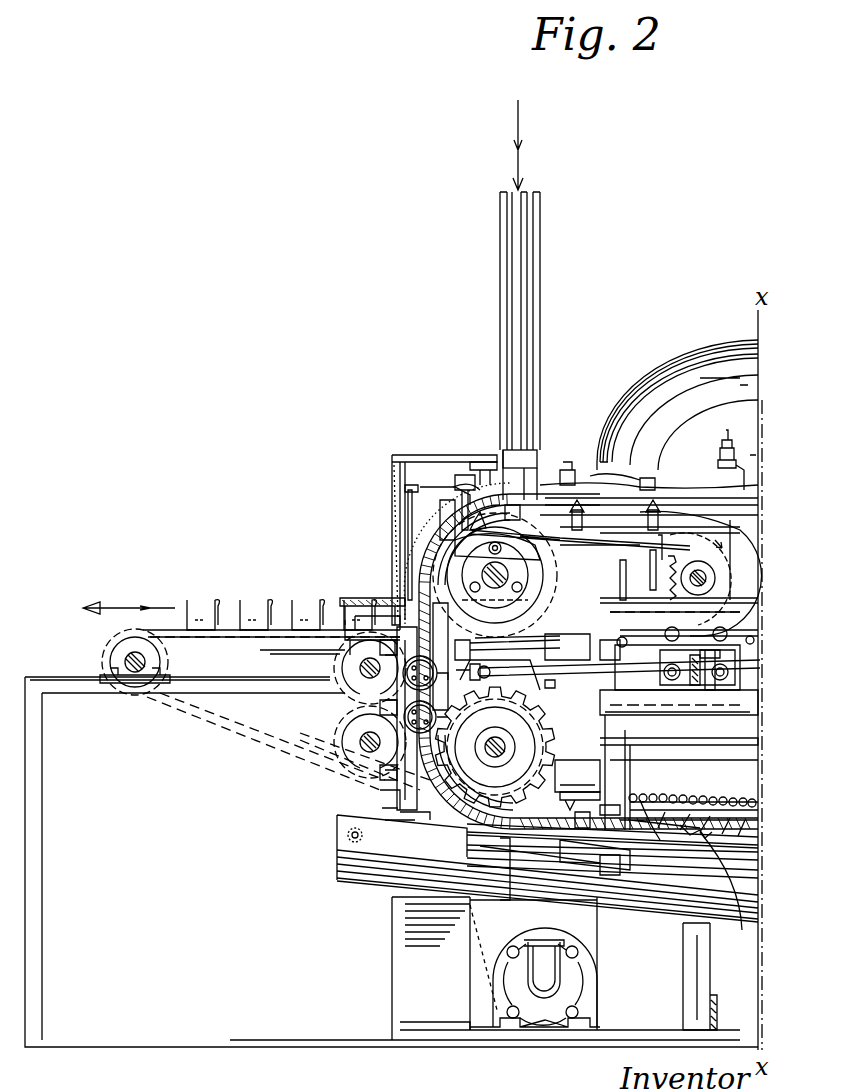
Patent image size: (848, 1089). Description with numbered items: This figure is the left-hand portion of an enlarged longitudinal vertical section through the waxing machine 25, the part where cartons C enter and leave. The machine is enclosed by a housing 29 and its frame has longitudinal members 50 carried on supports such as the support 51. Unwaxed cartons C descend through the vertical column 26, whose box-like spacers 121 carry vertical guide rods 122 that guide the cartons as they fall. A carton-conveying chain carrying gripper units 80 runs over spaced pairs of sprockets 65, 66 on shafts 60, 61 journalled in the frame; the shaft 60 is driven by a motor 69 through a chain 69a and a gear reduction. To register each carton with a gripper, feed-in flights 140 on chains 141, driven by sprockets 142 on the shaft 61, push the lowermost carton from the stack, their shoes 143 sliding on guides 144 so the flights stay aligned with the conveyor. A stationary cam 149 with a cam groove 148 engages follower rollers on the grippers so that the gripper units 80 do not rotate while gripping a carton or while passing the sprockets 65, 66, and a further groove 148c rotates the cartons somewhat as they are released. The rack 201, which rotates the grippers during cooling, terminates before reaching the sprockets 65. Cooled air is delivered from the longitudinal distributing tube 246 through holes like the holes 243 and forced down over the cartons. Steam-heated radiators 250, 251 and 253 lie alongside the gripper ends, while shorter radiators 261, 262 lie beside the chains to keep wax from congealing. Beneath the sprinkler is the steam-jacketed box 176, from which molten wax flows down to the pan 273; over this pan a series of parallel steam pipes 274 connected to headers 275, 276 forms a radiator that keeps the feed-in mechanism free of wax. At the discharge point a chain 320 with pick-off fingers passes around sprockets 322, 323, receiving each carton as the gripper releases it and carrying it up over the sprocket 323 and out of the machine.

The waxing machine 25 is at (722, 331).
The vertical column 26 is at (550, 278).
The housing 29 is at (652, 360).
The longitudinal members 50 is at (380, 598).
The support 51 is at (645, 672).
The shaft 60 is at (495, 747).
The shaft 61 is at (490, 660).
The sprockets 65 is at (538, 666).
The sprockets 66 is at (498, 660).
The motor 69 is at (592, 986).
The chain 69a is at (472, 933).
The gripper units 80 is at (356, 710).
The box-like spacers 121 is at (537, 440).
The vertical guide rods 122 is at (540, 232).
The feed-in flights 140 is at (620, 520).
The feed-in chains 141 is at (680, 610).
The sprockets 142 is at (470, 560).
The shoes 143 is at (467, 490).
The guides 144 is at (470, 530).
The cam groove 148 is at (462, 520).
The cam groove 148c is at (345, 662).
The stationary cam 149 is at (450, 490).
The box 176 is at (746, 470).
The rack 201 is at (727, 889).
The holes 243 is at (675, 800).
The longitudinal distributing tube 246 is at (668, 738).
The radiator 250 is at (487, 480).
The radiator 251 is at (380, 788).
The radiator 253 is at (575, 790).
The radiator 261 is at (705, 468).
The radiator 262 is at (360, 632).
The pan 273 is at (679, 701).
The steam pipes 274 is at (560, 655).
The header 275 is at (478, 680).
The header 276 is at (700, 686).
The chain 320 is at (235, 745).
The sprocket 322 is at (320, 758).
The sprocket 323 is at (350, 655).
The cartons C is at (202, 602).